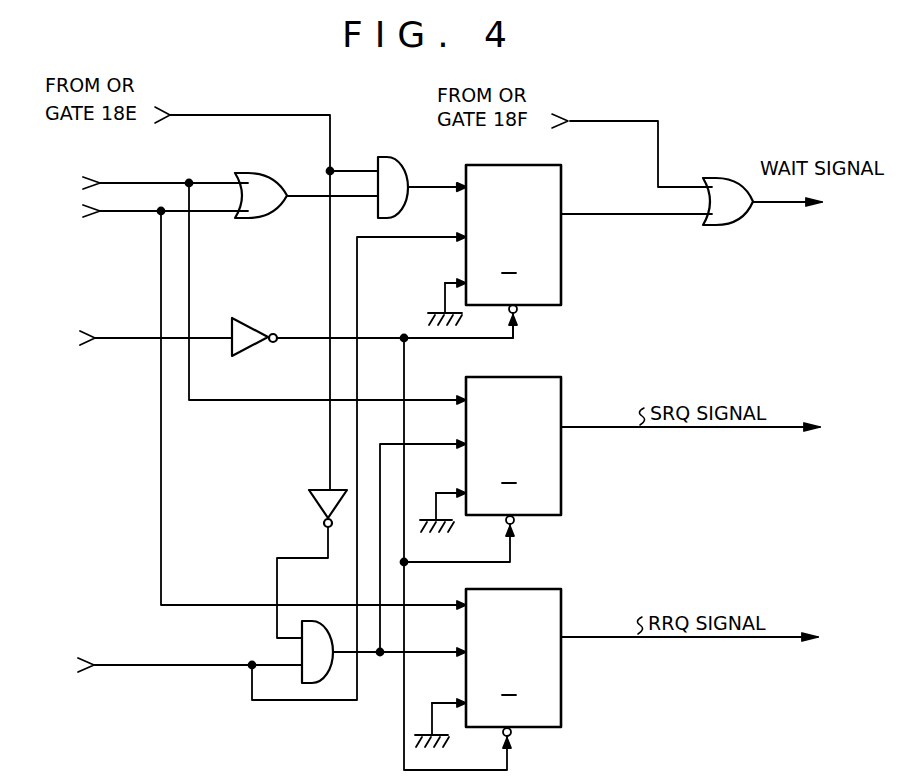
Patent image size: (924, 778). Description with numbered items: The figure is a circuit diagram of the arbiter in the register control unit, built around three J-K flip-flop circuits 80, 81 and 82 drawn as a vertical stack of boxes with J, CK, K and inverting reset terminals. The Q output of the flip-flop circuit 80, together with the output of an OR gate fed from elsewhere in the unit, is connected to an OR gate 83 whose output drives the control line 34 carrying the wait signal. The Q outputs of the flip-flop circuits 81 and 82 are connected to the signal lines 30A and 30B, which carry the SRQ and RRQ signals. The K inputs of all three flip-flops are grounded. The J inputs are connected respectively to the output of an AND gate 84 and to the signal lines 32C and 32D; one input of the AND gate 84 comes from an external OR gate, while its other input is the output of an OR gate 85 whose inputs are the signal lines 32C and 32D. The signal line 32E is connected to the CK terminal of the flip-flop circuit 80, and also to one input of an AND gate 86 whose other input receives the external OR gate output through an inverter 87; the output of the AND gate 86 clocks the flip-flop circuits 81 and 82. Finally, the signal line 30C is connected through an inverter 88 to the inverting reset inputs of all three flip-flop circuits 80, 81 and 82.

The signal line 32C is at (126, 181).
The signal line 32D is at (128, 213).
The signal line 30C is at (120, 340).
The signal line 32E is at (153, 667).
The OR gate 85 is at (261, 218).
The AND gate 84 is at (395, 157).
The J-K flip-flop circuit 80 is at (562, 292).
The J-K flip-flop circuit 81 is at (562, 487).
The J-K flip-flop circuit 82 is at (562, 713).
The OR gate 83 is at (718, 226).
The control line 34 is at (789, 205).
The inverter 88 is at (252, 352).
The inverter 87 is at (303, 506).
The AND gate 86 is at (318, 684).
The signal line 30A is at (760, 430).
The signal line 30B is at (760, 640).